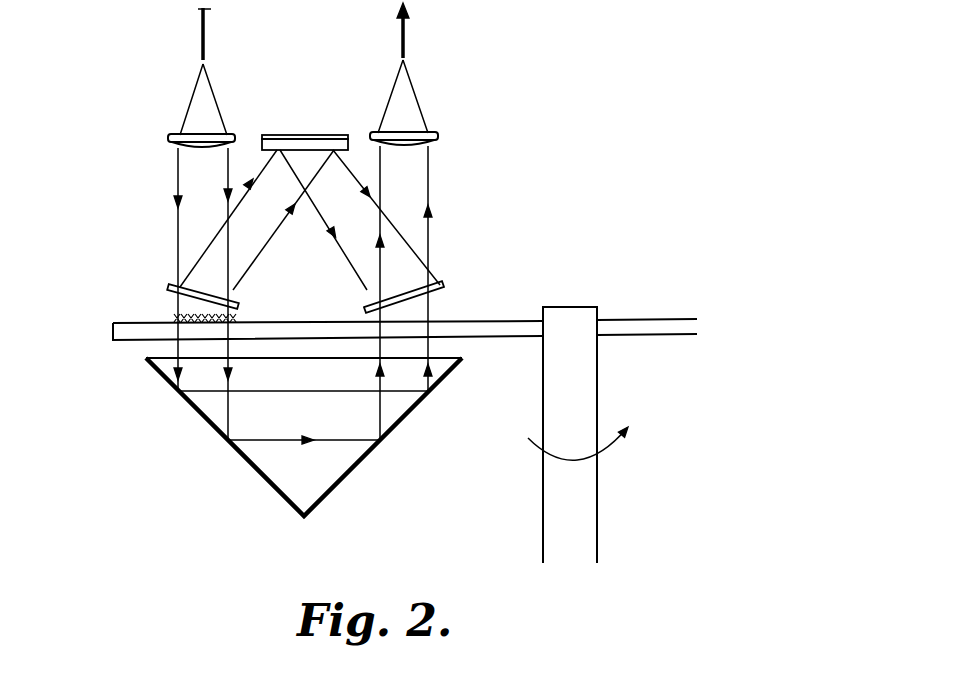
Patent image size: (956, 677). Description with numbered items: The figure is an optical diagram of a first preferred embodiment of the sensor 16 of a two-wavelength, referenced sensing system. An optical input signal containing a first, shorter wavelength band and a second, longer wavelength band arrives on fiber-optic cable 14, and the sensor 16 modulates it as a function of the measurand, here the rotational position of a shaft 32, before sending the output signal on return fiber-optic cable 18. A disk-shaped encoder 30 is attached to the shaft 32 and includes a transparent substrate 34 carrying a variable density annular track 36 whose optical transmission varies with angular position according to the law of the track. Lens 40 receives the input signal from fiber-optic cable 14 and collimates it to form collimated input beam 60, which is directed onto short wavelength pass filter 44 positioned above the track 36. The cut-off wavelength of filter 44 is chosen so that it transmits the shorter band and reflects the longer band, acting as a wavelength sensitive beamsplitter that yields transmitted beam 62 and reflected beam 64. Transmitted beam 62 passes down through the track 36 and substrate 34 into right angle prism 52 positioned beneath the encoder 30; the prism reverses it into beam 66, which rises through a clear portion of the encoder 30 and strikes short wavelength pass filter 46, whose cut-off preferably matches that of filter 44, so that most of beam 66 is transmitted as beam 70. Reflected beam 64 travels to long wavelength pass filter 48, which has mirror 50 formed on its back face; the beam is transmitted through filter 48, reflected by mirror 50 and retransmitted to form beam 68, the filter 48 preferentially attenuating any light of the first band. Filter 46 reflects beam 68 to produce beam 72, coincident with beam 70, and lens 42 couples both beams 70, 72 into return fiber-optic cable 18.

The fiber-optic cable 14 is at (200, 41).
The sensor 16 is at (530, 189).
The fiber-optic cable 18 is at (405, 37).
The encoder 30 is at (367, 291).
The shaft 32 is at (548, 400).
The transparent substrate 34 is at (127, 322).
The annular track 36 is at (165, 316).
The lens 40 is at (170, 137).
The lens 42 is at (438, 135).
The short wavelength pass filter 44 is at (168, 285).
The short wavelength pass filter 46 is at (437, 281).
The long wavelength pass filter 48 is at (262, 146).
The mirror 50 is at (348, 134).
The right angle prism 52 is at (348, 473).
The collimated input beam 60 is at (177, 180).
The transmitted beam 62 is at (167, 288).
The reflected beam 64 is at (262, 250).
The beam 66 is at (178, 348).
The beam 68 is at (356, 272).
The beam 70 is at (346, 295).
The beam 72 is at (428, 187).